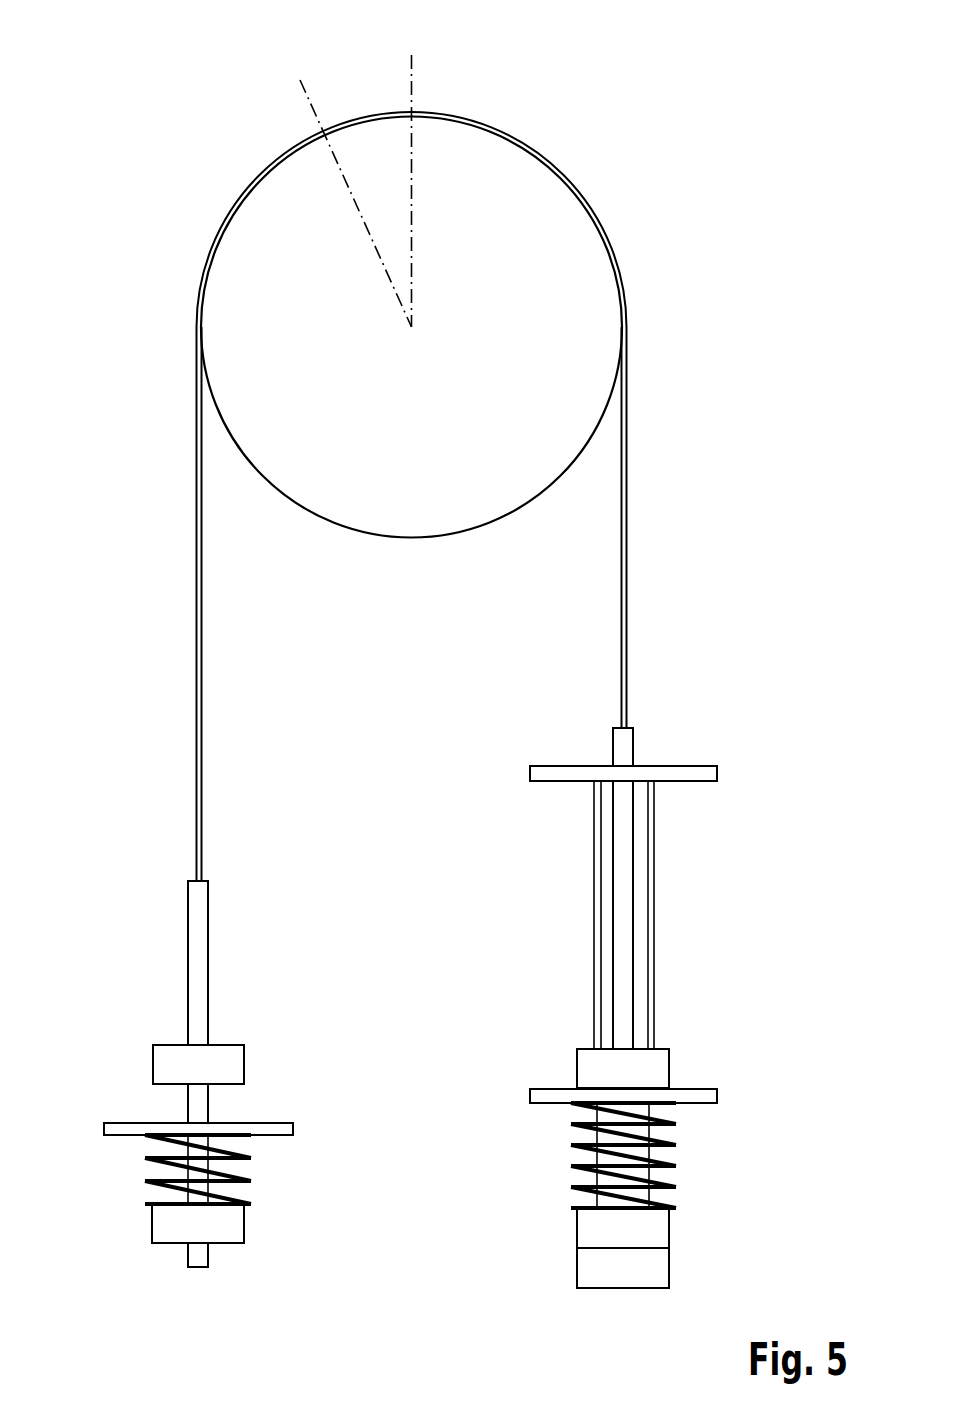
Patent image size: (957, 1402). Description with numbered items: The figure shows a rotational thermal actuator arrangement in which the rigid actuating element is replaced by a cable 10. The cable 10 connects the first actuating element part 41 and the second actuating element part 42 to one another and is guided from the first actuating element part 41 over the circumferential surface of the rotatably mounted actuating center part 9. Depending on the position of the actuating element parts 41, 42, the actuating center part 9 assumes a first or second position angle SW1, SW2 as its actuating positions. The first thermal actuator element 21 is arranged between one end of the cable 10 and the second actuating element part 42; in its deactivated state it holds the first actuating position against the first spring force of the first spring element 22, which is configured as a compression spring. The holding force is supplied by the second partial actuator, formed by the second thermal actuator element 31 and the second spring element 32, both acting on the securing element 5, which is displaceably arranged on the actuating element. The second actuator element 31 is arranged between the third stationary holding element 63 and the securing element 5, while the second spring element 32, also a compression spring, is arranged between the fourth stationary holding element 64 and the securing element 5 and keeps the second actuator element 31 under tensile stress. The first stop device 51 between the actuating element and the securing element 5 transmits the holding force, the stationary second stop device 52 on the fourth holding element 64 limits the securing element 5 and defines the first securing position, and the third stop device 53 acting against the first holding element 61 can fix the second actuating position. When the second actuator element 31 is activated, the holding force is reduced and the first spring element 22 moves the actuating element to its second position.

The first position angle SW1 is at (413, 67).
The second position angle SW2 is at (304, 86).
The actuating center part 9 is at (412, 524).
The cable 10 is at (550, 163).
The first thermal actuator element 21 is at (622, 679).
The third stationary holding element 63 is at (717, 770).
The second actuating element part 42 is at (623, 867).
The second thermal actuator element 31 is at (654, 913).
The securing element 5 is at (669, 1068).
The second stop device 52 is at (566, 1078).
The fourth stationary holding element 64 is at (717, 1094).
The second spring element 32 is at (663, 1159).
The first stop device 51 is at (682, 1250).
The first actuating element part 41 is at (200, 952).
The third stop device 53 is at (156, 1112).
The first holding element 61 is at (293, 1127).
The first spring element 22 is at (232, 1178).